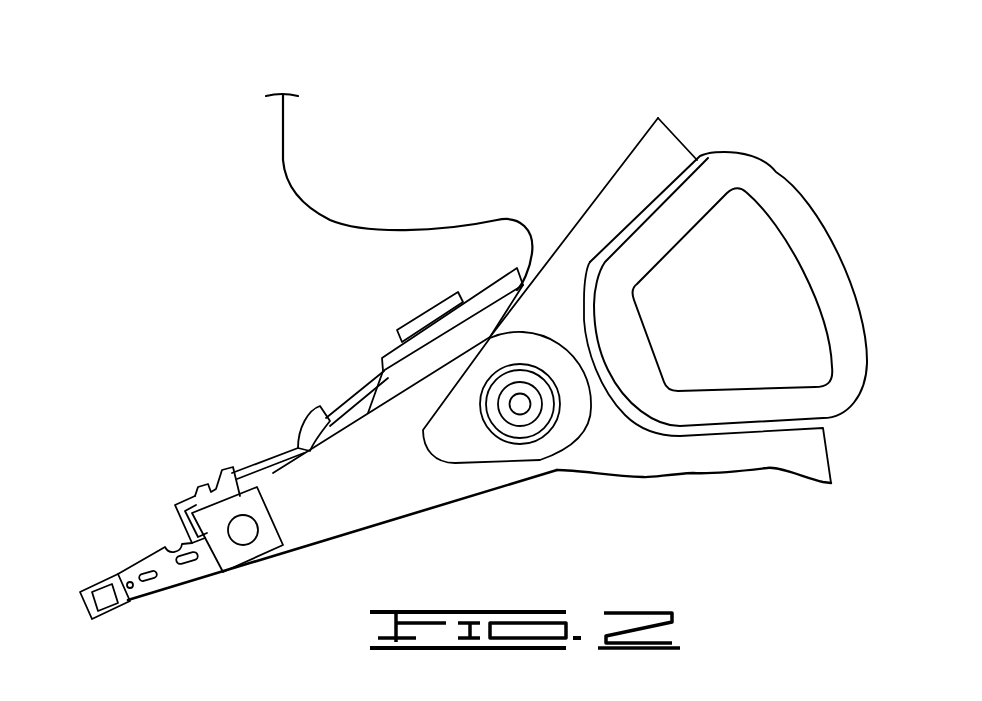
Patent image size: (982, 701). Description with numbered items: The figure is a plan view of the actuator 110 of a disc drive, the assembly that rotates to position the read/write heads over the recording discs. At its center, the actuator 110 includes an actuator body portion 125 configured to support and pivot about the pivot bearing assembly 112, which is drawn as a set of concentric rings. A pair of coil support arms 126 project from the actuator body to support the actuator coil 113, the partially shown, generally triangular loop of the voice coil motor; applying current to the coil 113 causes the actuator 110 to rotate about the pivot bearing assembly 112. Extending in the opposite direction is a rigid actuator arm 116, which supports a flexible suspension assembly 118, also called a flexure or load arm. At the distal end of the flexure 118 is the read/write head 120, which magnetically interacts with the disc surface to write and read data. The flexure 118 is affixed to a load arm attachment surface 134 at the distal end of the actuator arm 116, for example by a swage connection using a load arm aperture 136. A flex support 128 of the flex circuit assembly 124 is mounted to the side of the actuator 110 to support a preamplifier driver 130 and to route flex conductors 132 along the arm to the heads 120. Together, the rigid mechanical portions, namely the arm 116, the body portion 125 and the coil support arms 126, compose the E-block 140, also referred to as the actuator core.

The actuator 110 is at (378, 100).
The pivot bearing assembly 112 is at (541, 421).
The coil 113 is at (747, 152).
The actuator arm 116 is at (393, 500).
The suspension assembly 118 is at (177, 540).
The read/write head 120 is at (107, 614).
The flex circuit assembly 124 is at (285, 174).
The actuator body portion 125 is at (508, 488).
The coil support arm 126 is at (637, 183).
The flex support 128 is at (403, 373).
The preamplifier driver 130 is at (417, 315).
The flex conductor 132 is at (296, 452).
The load arm attachment surface 134 is at (198, 593).
The load arm aperture 136 is at (253, 541).
The E-block 140 is at (193, 305).